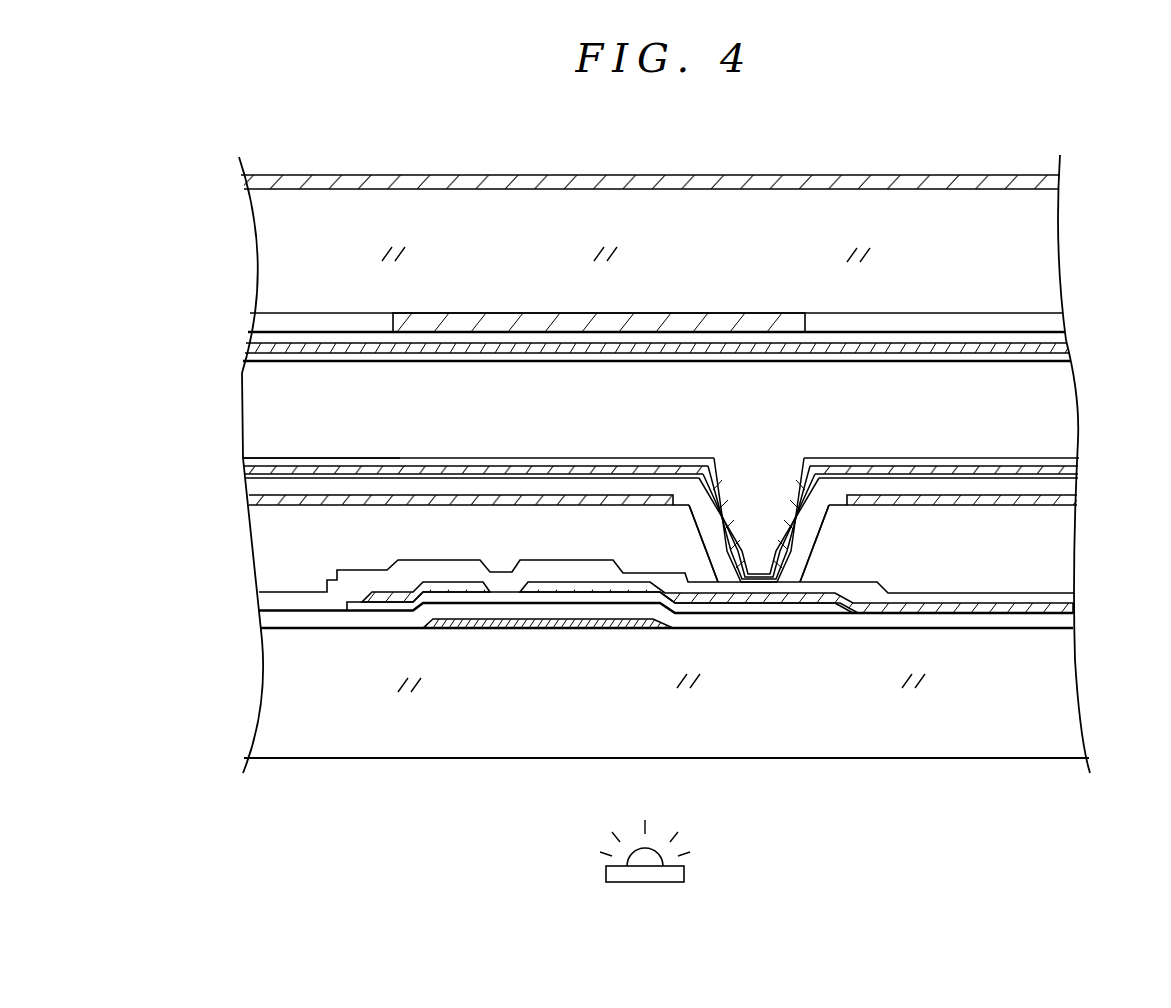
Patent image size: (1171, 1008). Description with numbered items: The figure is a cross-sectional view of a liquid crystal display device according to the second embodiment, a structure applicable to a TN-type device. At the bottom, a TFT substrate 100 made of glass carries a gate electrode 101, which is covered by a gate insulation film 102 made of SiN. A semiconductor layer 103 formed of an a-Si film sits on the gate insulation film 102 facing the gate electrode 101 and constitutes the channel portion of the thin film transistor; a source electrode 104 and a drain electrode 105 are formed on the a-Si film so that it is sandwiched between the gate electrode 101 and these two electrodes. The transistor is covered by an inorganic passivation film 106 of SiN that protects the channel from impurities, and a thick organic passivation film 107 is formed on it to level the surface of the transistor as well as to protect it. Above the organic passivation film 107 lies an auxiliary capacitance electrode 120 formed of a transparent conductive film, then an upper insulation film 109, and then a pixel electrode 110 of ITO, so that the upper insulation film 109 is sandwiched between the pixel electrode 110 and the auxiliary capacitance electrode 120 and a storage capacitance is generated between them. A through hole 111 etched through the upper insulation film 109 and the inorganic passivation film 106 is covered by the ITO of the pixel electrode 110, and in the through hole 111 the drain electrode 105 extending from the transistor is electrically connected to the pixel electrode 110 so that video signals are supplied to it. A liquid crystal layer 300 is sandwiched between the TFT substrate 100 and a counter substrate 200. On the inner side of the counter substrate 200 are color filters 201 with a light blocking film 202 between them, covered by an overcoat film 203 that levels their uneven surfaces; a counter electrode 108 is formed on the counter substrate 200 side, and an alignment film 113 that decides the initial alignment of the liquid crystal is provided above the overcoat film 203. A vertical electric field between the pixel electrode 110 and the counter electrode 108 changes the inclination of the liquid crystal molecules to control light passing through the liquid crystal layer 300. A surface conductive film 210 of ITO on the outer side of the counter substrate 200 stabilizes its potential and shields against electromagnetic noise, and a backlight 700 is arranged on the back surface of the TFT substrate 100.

The TFT substrate 100 is at (335, 732).
The gate electrode 101 is at (506, 632).
The gate insulation film 102 is at (262, 621).
The semiconductor layer 103 is at (590, 596).
The source electrode 104 is at (442, 594).
The drain electrode 105 is at (645, 595).
The inorganic passivation film 106 is at (262, 597).
The organic passivation film 107 is at (262, 543).
The counter electrode 108 is at (246, 347).
The upper insulation film 109 is at (262, 478).
The pixel electrode 110 is at (622, 457).
The through hole 111 is at (764, 478).
The alignment film 113 is at (1065, 364).
The auxiliary capacitance electrode 120 is at (262, 500).
The counter substrate 200 is at (1047, 245).
The color filter 201 is at (1062, 323).
The light blocking film 202 is at (752, 322).
The overcoat film 203 is at (1063, 340).
The surface conductive film 210 is at (960, 178).
The liquid crystal layer 300 is at (1065, 385).
The backlight 700 is at (690, 868).